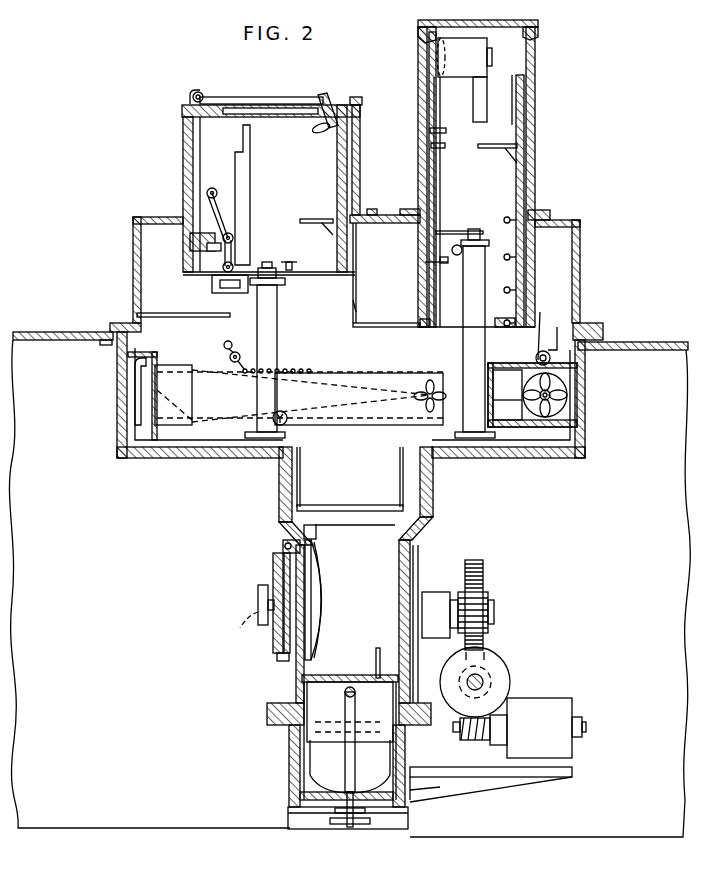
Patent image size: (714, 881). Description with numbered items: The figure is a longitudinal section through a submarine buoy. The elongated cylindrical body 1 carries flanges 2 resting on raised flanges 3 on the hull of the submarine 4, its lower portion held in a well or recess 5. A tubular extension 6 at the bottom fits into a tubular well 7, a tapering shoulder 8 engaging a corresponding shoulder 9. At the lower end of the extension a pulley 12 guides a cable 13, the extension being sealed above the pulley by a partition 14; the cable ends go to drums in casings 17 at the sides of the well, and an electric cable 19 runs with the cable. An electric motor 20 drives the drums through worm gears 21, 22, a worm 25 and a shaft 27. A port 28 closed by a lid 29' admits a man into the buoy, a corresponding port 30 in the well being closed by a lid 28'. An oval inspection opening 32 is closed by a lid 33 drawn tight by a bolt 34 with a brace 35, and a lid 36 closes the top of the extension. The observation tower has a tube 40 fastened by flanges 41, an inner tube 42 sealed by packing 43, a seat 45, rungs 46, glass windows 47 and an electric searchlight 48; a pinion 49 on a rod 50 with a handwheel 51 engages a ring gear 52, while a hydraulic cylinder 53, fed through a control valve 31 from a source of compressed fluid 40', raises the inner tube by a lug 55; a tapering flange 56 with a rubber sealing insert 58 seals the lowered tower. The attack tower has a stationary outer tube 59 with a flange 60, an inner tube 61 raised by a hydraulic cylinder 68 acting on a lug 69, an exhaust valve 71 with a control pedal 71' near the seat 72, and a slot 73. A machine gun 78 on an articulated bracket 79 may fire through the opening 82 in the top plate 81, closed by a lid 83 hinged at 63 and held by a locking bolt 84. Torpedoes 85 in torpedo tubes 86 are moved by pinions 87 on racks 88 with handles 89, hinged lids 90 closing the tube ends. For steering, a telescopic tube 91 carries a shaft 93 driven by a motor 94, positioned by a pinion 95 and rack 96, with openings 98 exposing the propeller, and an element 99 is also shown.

The elongated cylindrical body 1 is at (133, 236).
The flanges 2 is at (112, 323).
The raised flanges 3 is at (105, 326).
The submarine 4 is at (48, 334).
The well or recess 5 is at (117, 410).
The tubular extension 6 is at (402, 496).
The tubular well 7 is at (418, 522).
The tapering shoulder 8 is at (320, 512).
The shoulder 9 is at (313, 523).
The pulley 12 is at (344, 702).
The cable 13 is at (356, 770).
The partition 14 is at (330, 678).
The casings 17 is at (419, 554).
The electric cable 19 is at (250, 616).
The electric motor 20 is at (540, 698).
The worm gear 21 is at (500, 664).
The worm gear 22 is at (484, 574).
The worm 25 is at (466, 742).
The shaft 27 is at (484, 682).
The port 28 is at (271, 539).
The lid 28' is at (257, 603).
The lid 29' is at (337, 600).
The port 30 is at (283, 645).
The control valve 31 is at (457, 256).
The oval inspection opening 32 is at (312, 805).
The lid 33 is at (318, 792).
The bolt 34 is at (350, 828).
The brace 35 is at (366, 812).
The lid 36 is at (383, 446).
The tube 40 is at (491, 173).
The source of compressed fluid 40' is at (342, 315).
The flanges 41 is at (545, 210).
The inner tube 42 is at (482, 98).
The packing 43 is at (530, 310).
The seat 45 is at (490, 144).
The rungs 46 is at (505, 218).
The glass windows 47 is at (522, 98).
The electric searchlight 48 is at (440, 60).
The pinion 49 is at (430, 268).
The rod 50 is at (440, 183).
The handwheel 51 is at (444, 130).
The ring gear 52 is at (536, 60).
The hydraulic cylinder 53 is at (485, 320).
The lug 55 is at (456, 231).
The tapering flange 56 is at (540, 32).
The rubber sealing insert 58 is at (424, 35).
The stationary outer tube 59 is at (354, 166).
The flange 60 is at (368, 213).
The inner tube 61 is at (359, 138).
The hinge 63 is at (197, 91).
The hydraulic cylinder 68 is at (257, 334).
The lug 69 is at (310, 272).
The exhaust valve 71 is at (298, 408).
The control pedal 71' is at (301, 251).
The seat 72 is at (312, 219).
The slot 73 is at (186, 158).
The machine gun 78 is at (250, 165).
The articulated bracket 79 is at (265, 165).
The top plate 81 is at (356, 108).
The opening 82 is at (288, 115).
The lid 83 is at (300, 100).
The locking bolt 84 is at (329, 100).
The torpedoes 85 is at (195, 458).
The torpedo tubes 86 is at (408, 378).
The pinions 87 is at (230, 357).
The racks 88 is at (312, 368).
The handles 89 is at (225, 342).
The hinged lids 90 is at (136, 384).
The telescopic tube 91 is at (578, 416).
The shaft 93 is at (560, 398).
The motor 94 is at (535, 352).
The pinion 95 is at (542, 333).
The rack 96 is at (506, 382).
The openings 98 is at (560, 402).
The blade 99 is at (556, 386).